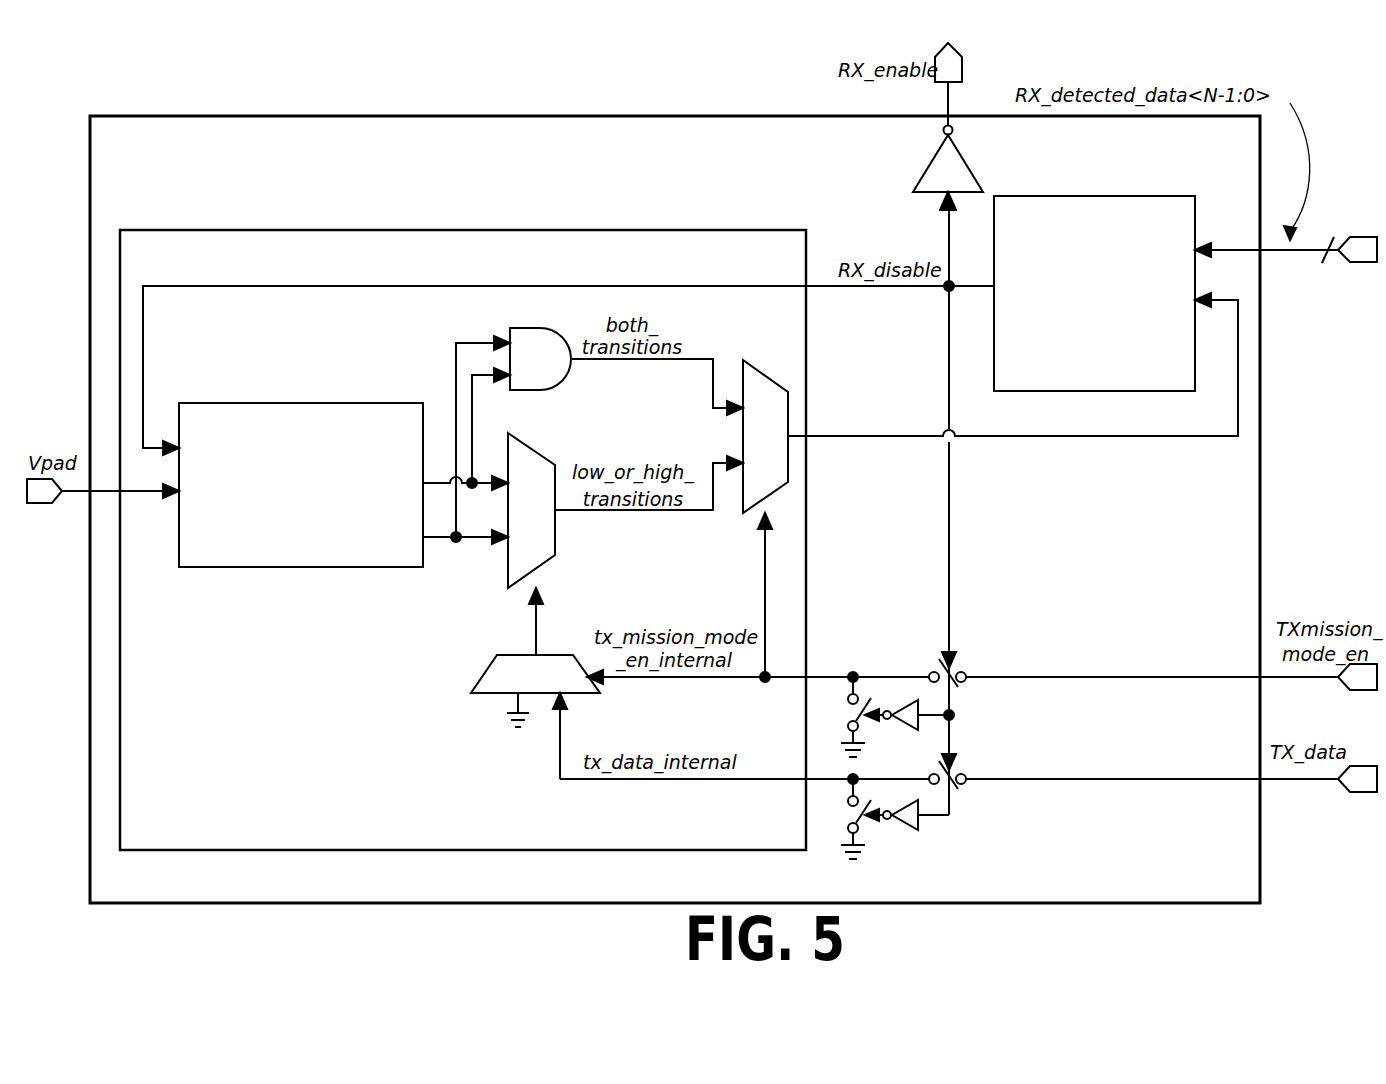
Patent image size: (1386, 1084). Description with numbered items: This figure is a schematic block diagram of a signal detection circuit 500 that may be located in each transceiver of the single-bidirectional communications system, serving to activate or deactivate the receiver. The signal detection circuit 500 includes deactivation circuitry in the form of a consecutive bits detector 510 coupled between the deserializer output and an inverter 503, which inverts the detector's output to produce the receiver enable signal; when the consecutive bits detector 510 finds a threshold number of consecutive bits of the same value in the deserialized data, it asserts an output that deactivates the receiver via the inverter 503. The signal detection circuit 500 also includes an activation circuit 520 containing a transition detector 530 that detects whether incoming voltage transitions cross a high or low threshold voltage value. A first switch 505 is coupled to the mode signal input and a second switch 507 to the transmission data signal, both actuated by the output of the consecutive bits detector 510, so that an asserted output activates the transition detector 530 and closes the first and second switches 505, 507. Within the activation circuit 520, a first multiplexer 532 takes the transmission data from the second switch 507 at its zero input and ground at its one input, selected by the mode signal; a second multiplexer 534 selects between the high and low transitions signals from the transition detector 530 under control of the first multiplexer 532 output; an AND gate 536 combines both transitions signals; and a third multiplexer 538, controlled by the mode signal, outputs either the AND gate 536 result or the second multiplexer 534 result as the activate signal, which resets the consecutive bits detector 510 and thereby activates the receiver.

The signal detection circuit 500 is at (675, 509).
The inverter 503 is at (926, 179).
The first switch 505 is at (993, 658).
The second switch 507 is at (983, 761).
The consecutive bits detector 510 is at (1094, 280).
The activation circuit 520 is at (463, 540).
The transition detector 530 is at (301, 485).
The first multiplexer 532 is at (471, 691).
The second multiplexer 534 is at (557, 537).
The AND gate 536 is at (557, 390).
The third multiplexer 538 is at (763, 373).